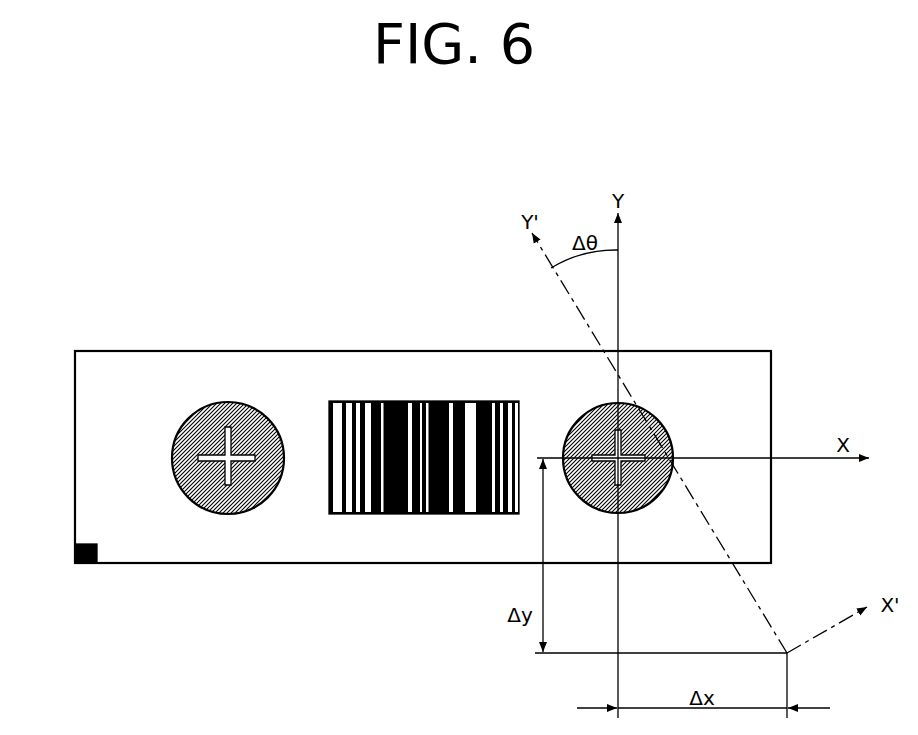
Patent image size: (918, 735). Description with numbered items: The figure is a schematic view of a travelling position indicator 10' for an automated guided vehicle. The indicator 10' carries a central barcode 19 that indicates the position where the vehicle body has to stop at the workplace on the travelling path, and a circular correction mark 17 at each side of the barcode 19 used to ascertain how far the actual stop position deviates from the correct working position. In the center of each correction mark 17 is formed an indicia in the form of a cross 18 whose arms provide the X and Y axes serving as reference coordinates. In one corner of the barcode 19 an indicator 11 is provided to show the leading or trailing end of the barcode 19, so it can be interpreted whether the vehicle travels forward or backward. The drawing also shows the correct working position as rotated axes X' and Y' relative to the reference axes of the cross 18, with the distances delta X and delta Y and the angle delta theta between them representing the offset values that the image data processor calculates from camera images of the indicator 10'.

The travelling position indicator 10' is at (395, 404).
The indicator 11 is at (92, 563).
The correction mark 17 is at (233, 401).
The cross 18 is at (220, 437).
The barcode 19 is at (398, 401).